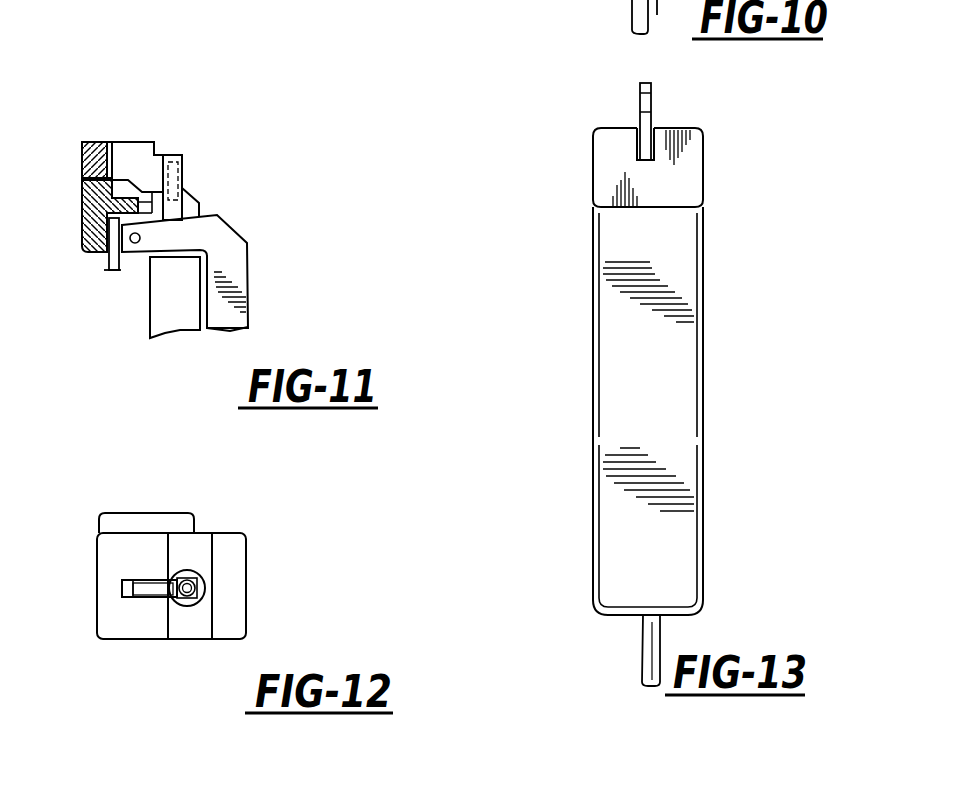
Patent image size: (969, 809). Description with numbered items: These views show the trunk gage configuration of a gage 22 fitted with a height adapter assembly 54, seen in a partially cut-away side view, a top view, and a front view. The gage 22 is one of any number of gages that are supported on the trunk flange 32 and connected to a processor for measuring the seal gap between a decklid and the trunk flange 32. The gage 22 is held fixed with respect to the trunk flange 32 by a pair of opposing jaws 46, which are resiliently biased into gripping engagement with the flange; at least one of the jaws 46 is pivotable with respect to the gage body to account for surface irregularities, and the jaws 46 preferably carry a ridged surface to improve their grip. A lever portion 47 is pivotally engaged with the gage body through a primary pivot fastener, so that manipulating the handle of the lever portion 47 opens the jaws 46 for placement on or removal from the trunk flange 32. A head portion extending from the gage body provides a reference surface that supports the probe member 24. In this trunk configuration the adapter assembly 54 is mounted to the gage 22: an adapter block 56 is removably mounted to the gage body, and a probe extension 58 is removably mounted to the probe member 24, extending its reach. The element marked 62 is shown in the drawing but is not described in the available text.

In FIG. 11, the gage 22 is at (232, 200).
In FIG. 11, the probe member 24 is at (120, 197).
In FIG. 11, the trunk flange 32 is at (110, 266).
In FIG. 11, the opposing jaws 46 is at (81, 239).
In FIG. 11, the lever portion 47 is at (244, 275).
In FIG. 13, the lever portion 47 is at (609, 341).
In FIG. 11, the adapter assembly 54 is at (103, 104).
In FIG. 11, the adapter block 56 is at (81, 163).
In FIG. 12, the adapter block 56 is at (103, 555).
In FIG. 13, the adapter block 56 is at (695, 140).
In FIG. 11, the probe extension 58 is at (124, 156).
In FIG. 12, the probe extension 58 is at (142, 594).
In FIG. 13, the probe extension 58 is at (645, 122).
In FIG. 11, the pin 62 is at (183, 158).
In FIG. 12, the pin 62 is at (188, 577).